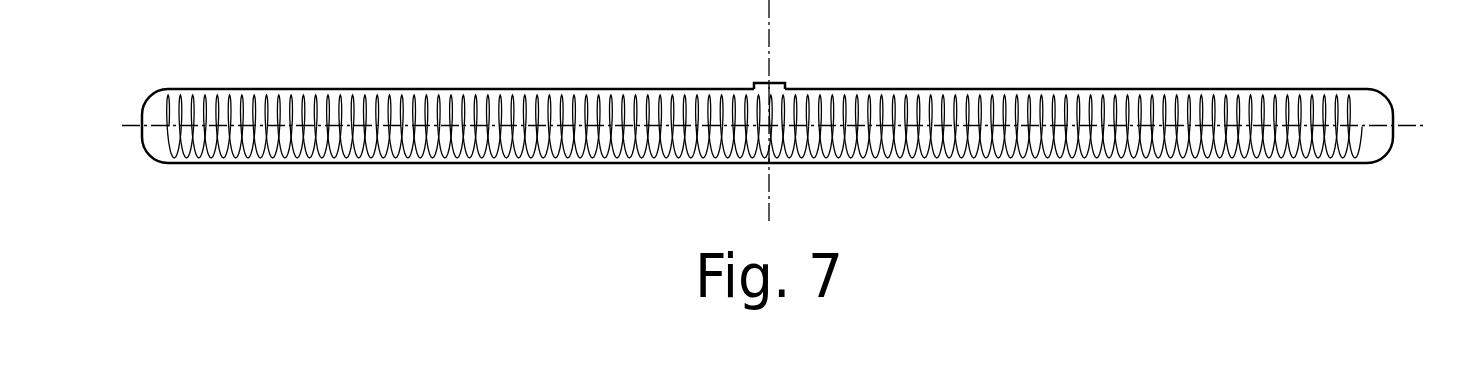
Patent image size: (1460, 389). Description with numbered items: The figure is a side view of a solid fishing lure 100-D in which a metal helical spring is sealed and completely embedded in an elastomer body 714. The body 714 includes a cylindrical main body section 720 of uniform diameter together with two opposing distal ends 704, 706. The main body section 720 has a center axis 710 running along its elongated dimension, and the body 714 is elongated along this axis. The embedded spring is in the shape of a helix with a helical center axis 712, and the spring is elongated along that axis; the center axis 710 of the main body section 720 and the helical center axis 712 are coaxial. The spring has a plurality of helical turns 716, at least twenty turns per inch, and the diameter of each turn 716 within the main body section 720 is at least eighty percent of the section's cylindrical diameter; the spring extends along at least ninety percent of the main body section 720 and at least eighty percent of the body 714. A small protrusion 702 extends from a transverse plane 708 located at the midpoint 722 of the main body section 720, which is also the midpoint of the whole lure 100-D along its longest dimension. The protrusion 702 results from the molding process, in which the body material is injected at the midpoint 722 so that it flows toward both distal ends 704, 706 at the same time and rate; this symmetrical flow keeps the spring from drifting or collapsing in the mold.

The lure embodiment 100-D is at (972, 90).
The protrusion 702 is at (774, 82).
The distal end 704 is at (142, 137).
The distal end 706 is at (1393, 140).
The transverse plane 708 is at (768, 39).
The center axis 710 is at (142, 123).
The helical center axis 712 is at (1397, 125).
The body 714 is at (547, 90).
The helical turns 716 is at (447, 93).
The main body section 720 is at (1132, 90).
The midpoint 722 is at (770, 82).